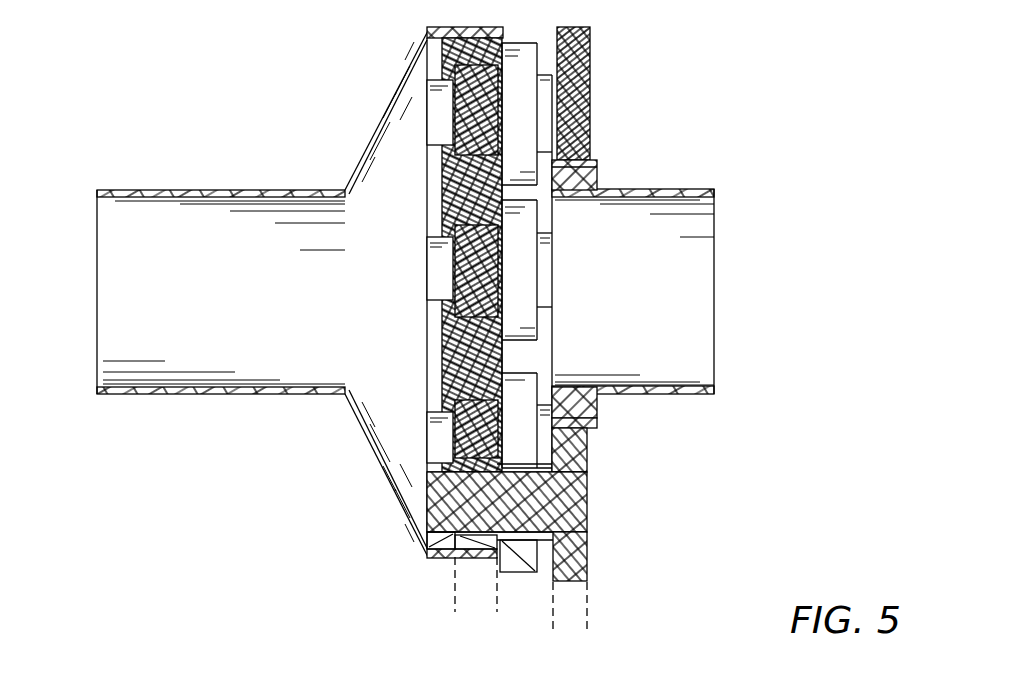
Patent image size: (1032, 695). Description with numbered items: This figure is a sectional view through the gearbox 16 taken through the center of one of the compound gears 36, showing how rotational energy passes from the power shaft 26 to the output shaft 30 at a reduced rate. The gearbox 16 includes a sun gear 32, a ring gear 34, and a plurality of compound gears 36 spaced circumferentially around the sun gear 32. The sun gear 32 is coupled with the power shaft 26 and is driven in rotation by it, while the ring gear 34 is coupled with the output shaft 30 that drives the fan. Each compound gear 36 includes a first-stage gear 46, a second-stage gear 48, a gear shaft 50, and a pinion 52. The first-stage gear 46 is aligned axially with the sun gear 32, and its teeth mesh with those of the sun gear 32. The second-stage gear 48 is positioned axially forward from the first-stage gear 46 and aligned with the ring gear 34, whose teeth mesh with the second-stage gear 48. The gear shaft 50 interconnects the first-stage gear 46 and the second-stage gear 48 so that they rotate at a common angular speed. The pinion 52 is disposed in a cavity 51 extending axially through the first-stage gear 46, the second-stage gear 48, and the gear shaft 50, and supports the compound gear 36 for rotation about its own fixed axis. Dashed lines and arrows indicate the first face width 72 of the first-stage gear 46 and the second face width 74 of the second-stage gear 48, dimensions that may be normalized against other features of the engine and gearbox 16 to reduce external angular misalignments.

The gearbox 16 is at (248, 97).
The power shaft 26 is at (693, 190).
The output shaft 30 is at (158, 185).
The sun gear 32 is at (600, 170).
The ring gear 34 is at (490, 38).
The compound gear 36 is at (690, 508).
The first-stage gear 46 is at (590, 444).
The second-stage gear 48 is at (445, 463).
The gear shaft 50 is at (567, 488).
The cavity 51 is at (590, 530).
The pinion 52 is at (522, 472).
The first face width 72 is at (515, 623).
The second face width 74 is at (530, 606).